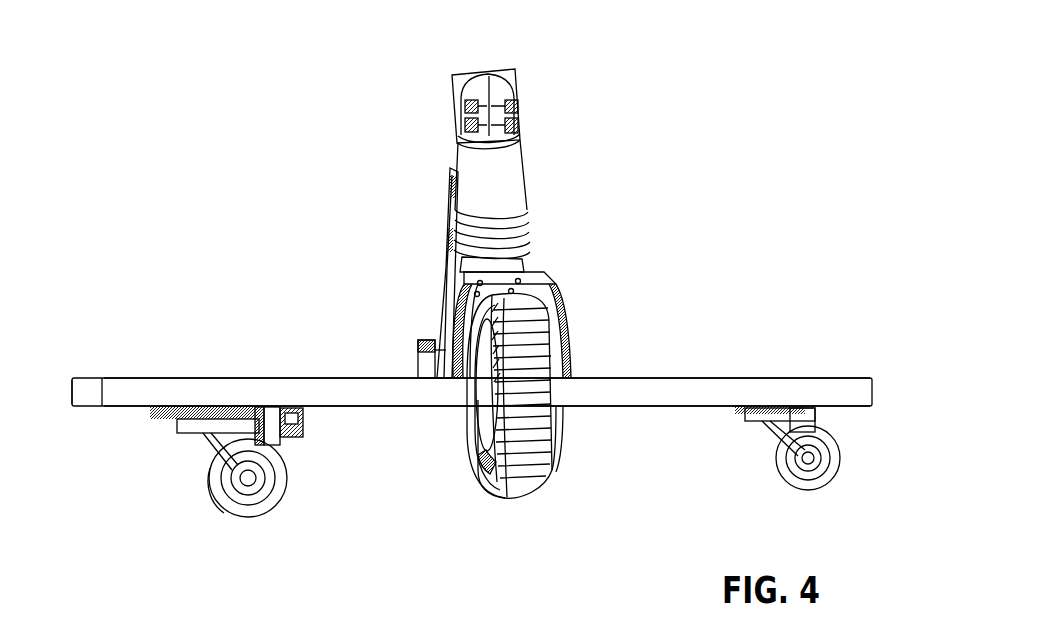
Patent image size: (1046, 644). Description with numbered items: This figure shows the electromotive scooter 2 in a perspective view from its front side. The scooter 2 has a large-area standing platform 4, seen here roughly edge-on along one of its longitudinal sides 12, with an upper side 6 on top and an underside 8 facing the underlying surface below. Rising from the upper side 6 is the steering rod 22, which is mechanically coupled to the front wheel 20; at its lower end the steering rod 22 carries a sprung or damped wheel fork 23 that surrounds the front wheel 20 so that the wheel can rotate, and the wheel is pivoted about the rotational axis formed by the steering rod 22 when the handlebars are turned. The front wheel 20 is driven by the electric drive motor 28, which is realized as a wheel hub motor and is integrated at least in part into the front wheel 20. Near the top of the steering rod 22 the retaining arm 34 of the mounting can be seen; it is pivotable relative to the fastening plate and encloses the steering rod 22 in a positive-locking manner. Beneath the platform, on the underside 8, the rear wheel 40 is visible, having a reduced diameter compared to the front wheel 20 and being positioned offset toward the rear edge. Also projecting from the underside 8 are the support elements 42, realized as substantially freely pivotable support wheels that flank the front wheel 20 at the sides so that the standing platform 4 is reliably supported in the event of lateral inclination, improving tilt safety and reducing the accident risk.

The electromotive scooter 2 is at (487, 312).
The standing platform 4 is at (500, 354).
The upper side 6 is at (487, 322).
The underside 8 is at (487, 460).
The longitudinal side 12 is at (74, 347).
The front wheel 20 is at (512, 422).
The steering rod 22 is at (541, 203).
The wheel fork 23 is at (406, 273).
The drive motor 28 is at (452, 433).
The retaining arm 34 is at (525, 92).
The rear wheel 40 is at (324, 463).
The support element 42 is at (533, 494).